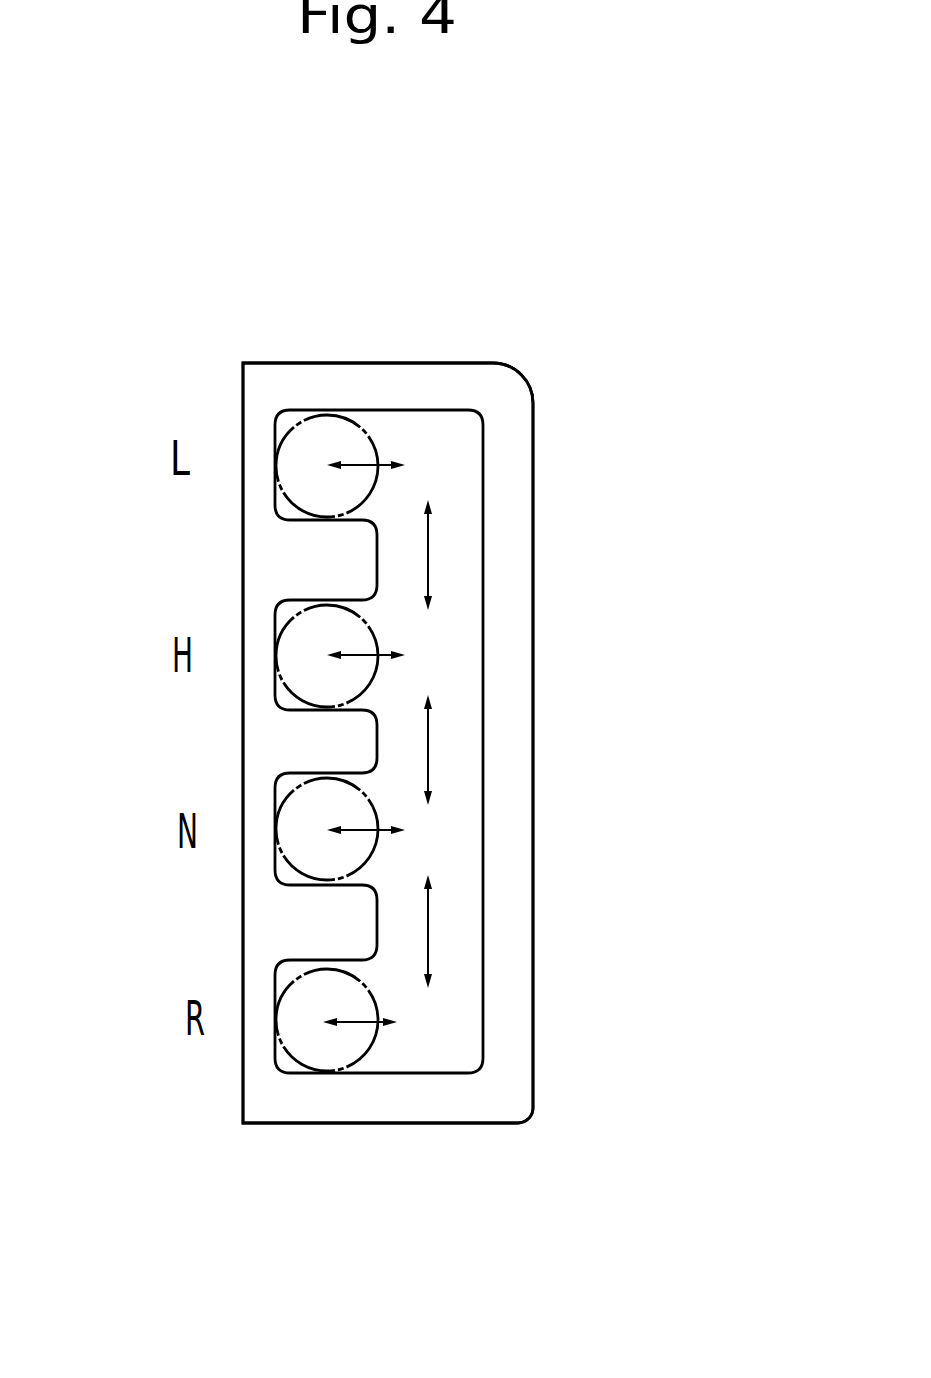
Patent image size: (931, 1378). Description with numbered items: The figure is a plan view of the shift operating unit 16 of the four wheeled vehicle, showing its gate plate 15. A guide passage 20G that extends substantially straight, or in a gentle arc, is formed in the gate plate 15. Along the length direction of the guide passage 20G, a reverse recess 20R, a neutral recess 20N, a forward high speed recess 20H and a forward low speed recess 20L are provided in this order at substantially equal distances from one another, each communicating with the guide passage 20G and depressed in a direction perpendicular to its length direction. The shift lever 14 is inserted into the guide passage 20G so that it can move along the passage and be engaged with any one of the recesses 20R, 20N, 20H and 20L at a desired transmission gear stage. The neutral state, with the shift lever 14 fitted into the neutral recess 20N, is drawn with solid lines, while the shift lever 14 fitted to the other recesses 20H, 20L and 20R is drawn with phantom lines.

The shift lever 14 is at (293, 473).
The gate plate 15 is at (525, 1077).
The shift operating unit 16 is at (378, 337).
The guide passage 20G is at (443, 935).
The forward low speed recess 20L is at (287, 520).
The forward high speed recess 20H is at (290, 713).
The neutral recess 20N is at (288, 878).
The reverse recess 20R is at (277, 1070).